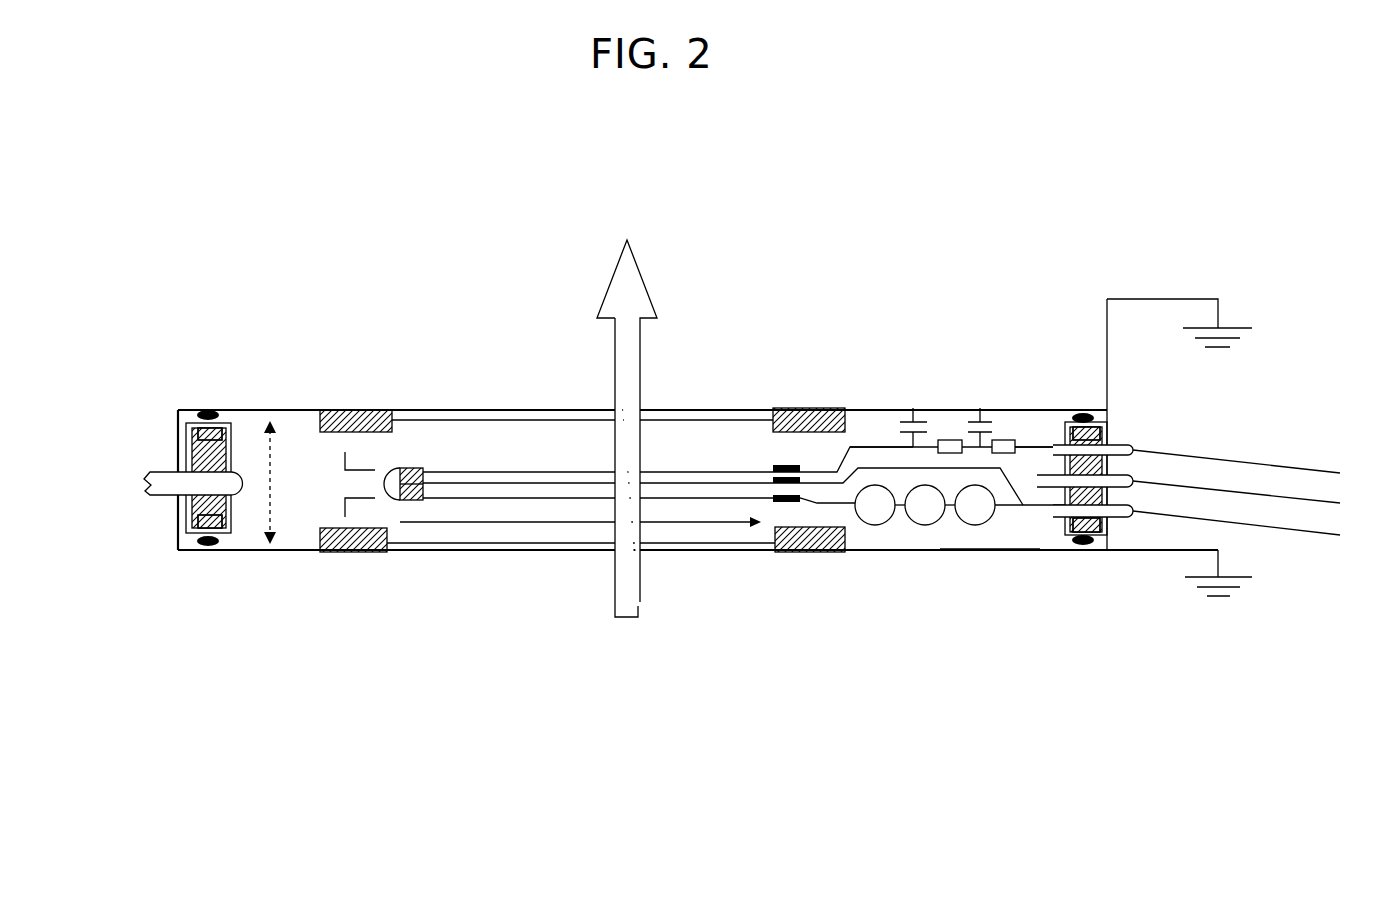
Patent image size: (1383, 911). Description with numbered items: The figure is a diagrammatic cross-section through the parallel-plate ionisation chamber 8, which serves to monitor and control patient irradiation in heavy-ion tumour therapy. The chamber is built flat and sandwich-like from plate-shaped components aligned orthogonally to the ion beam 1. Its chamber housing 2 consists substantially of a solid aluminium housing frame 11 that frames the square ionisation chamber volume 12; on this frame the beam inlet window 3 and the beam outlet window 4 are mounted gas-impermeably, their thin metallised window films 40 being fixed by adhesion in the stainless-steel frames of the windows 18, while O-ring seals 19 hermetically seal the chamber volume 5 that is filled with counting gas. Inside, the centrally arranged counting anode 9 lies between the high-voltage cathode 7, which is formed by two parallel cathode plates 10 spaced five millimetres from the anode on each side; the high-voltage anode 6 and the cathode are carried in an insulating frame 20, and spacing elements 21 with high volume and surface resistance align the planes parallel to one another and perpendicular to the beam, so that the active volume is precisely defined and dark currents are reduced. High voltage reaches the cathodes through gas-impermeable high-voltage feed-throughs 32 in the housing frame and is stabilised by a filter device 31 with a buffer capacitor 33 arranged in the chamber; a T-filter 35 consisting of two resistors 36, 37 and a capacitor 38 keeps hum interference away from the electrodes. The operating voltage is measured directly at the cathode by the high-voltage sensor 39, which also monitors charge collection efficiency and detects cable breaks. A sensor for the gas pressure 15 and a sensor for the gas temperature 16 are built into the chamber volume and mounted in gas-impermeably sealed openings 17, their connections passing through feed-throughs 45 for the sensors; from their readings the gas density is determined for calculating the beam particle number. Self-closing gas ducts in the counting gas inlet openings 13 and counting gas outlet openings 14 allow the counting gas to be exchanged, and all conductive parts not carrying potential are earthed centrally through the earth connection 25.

The ion beam 1 is at (640, 602).
The chamber housing 2 is at (300, 410).
The beam inlet window 3 is at (527, 547).
The beam outlet window 4 is at (425, 410).
The chamber volume 5 is at (580, 571).
The ionisation chamber volume 12 is at (437, 508).
The high-voltage anode 6 is at (723, 436).
The counting anode 9 is at (540, 483).
The high-voltage cathode 7 is at (744, 420).
The cathode plates 10 is at (590, 498).
The parallel-plate ionisation chamber 8 is at (953, 237).
The housing frame 11 is at (184, 468).
The counting gas inlet openings 13 is at (1210, 499).
The counting gas outlet openings 14 is at (143, 483).
The sensor for gas pressure 15 is at (923, 527).
The sensor for gas temperature 16 is at (972, 527).
The gas-impermeably sealed openings 17 is at (987, 540).
The frames of the windows 18 is at (242, 410).
The O-ring seals 19 is at (182, 410).
The frame of the counting anode and high-voltage cathode 20 is at (793, 500).
The spacing elements 21 is at (411, 505).
The earth connection 25 is at (1183, 299).
The filter device 31 is at (893, 428).
The high-voltage feed-throughs 32 is at (1218, 468).
The buffer capacitor 33 is at (922, 420).
The T-filter 35 is at (1016, 425).
The resistor 36 is at (958, 425).
The resistor 37 is at (1034, 428).
The capacitor 38 is at (990, 425).
The high-voltage sensor 39 is at (873, 527).
The window films 40 is at (737, 412).
The feed-throughs for the sensors 45 is at (1218, 533).